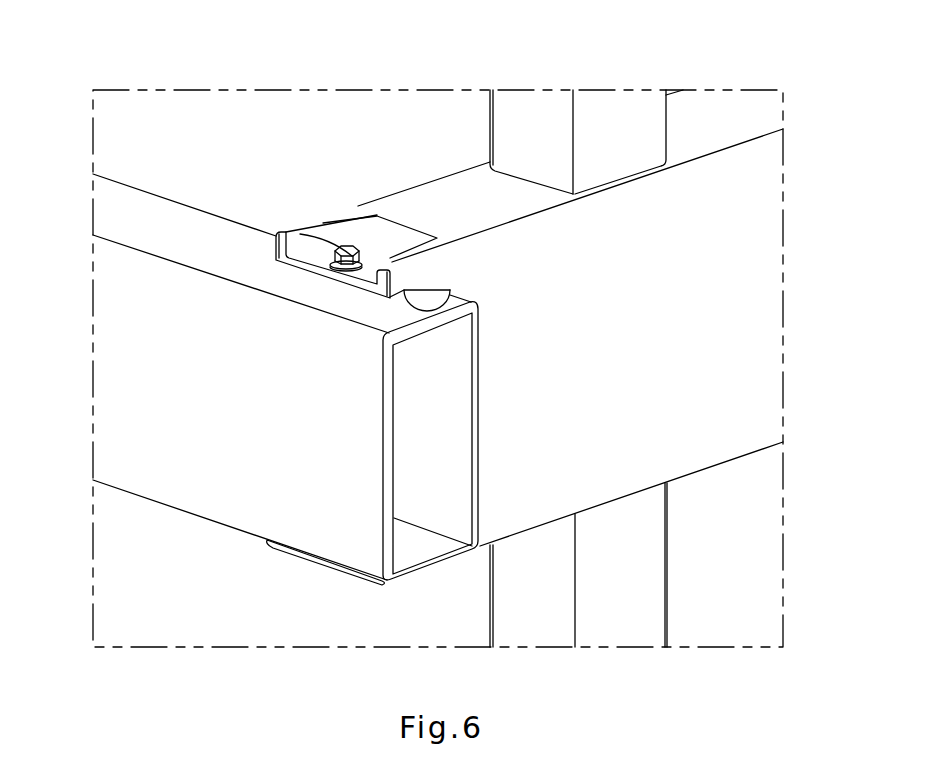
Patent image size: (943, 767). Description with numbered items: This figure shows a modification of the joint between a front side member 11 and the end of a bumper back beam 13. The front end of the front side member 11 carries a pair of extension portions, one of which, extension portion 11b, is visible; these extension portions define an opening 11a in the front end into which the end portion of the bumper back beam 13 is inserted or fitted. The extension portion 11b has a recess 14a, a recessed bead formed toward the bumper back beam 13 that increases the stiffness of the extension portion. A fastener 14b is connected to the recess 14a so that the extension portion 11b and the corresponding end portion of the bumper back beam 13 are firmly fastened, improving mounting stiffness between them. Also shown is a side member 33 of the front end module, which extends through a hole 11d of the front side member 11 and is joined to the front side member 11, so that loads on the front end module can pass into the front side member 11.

The front side member 11 is at (755, 329).
The opening 11a is at (450, 290).
The extension portion 11b is at (293, 231).
The hole 11d is at (533, 177).
The bumper back beam 13 is at (113, 412).
The recess 14a is at (388, 234).
The fastener 14b is at (347, 248).
The side member 33 is at (615, 103).